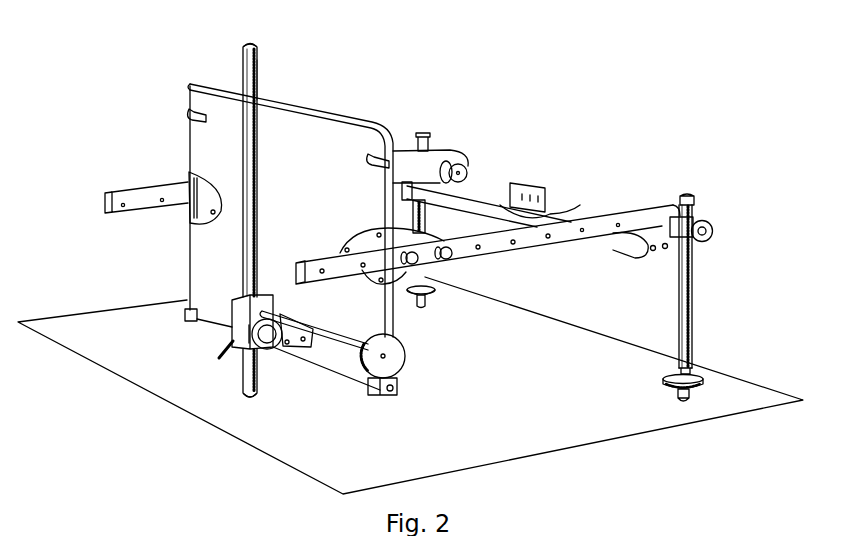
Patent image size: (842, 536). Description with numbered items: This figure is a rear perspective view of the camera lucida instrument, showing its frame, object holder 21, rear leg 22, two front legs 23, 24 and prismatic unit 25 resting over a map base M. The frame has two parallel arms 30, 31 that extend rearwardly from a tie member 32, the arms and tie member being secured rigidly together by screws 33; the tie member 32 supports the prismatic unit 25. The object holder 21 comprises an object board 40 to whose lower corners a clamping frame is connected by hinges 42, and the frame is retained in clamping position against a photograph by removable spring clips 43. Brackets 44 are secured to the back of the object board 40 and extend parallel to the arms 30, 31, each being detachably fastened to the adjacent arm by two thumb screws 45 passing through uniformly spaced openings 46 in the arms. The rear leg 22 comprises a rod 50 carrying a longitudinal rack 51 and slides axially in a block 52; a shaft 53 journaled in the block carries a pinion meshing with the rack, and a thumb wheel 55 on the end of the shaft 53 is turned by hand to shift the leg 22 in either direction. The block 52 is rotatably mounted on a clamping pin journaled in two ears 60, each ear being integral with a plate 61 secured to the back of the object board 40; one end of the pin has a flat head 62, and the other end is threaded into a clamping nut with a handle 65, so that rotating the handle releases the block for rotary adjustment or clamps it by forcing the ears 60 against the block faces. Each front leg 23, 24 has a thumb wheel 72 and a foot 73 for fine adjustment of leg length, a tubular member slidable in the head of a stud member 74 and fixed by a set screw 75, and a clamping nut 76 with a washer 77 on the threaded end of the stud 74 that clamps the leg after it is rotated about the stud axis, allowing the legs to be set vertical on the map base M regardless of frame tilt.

The map base M is at (445, 462).
The object holder 21 is at (186, 137).
The rear leg 22 is at (243, 62).
The front leg 23 is at (694, 291).
The front leg 24 is at (428, 150).
The prismatic unit 25 is at (524, 195).
The arm 30 is at (530, 251).
The arm 31 is at (153, 208).
The tie member 32 is at (470, 208).
The screws 33 is at (665, 249).
The object board 40 is at (325, 122).
The hinges 42 is at (398, 386).
The spring clips 43 is at (192, 110).
The brackets 44 is at (200, 198).
The thumb screws 45 is at (418, 265).
The openings 46 is at (125, 203).
The rod 50 is at (253, 48).
The rack 51 is at (258, 86).
The block 52 is at (232, 313).
The shaft 53 is at (346, 350).
The thumb wheel 55 is at (404, 352).
The ears 60 is at (249, 333).
The plate 61 is at (290, 315).
The pin head 62 is at (271, 346).
The handle 65 is at (221, 347).
The thumb wheel 72 is at (664, 383).
The foot 73 is at (681, 398).
The stud member 74 is at (697, 218).
The set screw 75 is at (714, 234).
The clamping nut 76 is at (467, 175).
The washer 77 is at (450, 165).